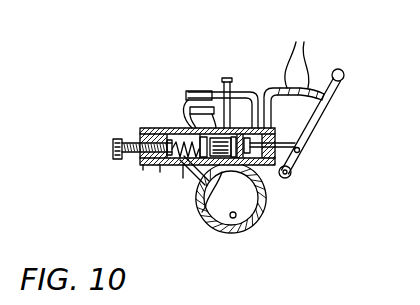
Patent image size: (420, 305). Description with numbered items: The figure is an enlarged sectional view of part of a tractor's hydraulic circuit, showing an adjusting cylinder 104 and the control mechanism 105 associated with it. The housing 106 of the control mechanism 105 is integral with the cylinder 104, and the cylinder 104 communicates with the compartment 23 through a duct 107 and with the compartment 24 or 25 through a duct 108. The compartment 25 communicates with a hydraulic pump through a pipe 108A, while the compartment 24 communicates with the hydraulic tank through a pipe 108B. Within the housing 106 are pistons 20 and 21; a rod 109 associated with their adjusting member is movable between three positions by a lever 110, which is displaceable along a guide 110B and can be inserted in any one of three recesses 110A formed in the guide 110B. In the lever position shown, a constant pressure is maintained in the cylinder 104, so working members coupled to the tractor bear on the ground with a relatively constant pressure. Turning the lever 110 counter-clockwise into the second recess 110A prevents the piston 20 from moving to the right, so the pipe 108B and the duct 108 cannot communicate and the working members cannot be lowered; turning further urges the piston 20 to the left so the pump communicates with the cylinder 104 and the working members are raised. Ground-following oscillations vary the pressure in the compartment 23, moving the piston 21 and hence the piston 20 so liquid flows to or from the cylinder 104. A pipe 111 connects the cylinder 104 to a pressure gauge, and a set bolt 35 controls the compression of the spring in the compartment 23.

The piston 20 is at (238, 130).
The piston 21 is at (197, 126).
The compartment 23 is at (188, 168).
The compartment 24 is at (213, 93).
The compartment 25 is at (226, 195).
The set bolt 35 is at (112, 148).
The adjusting cylinder 104 is at (267, 202).
The control mechanism 105 is at (142, 170).
The housing 106 is at (160, 172).
The duct 107 is at (181, 178).
The duct 108 is at (202, 212).
The pipe 108A is at (188, 92).
The pipe 108B is at (190, 96).
The rod 109 is at (302, 142).
The lever 110 is at (311, 116).
The recesses 110A is at (295, 76).
The guide 110B is at (344, 80).
The pipe 111 is at (233, 80).